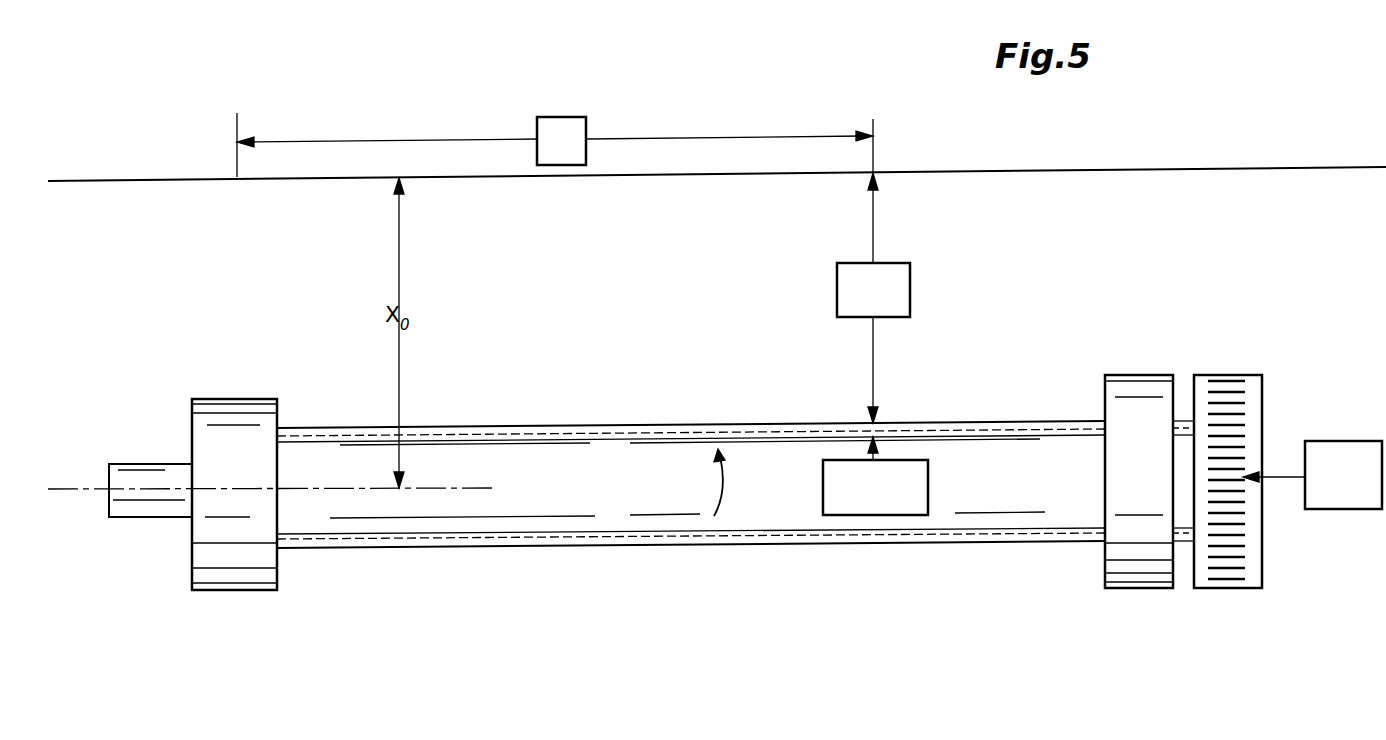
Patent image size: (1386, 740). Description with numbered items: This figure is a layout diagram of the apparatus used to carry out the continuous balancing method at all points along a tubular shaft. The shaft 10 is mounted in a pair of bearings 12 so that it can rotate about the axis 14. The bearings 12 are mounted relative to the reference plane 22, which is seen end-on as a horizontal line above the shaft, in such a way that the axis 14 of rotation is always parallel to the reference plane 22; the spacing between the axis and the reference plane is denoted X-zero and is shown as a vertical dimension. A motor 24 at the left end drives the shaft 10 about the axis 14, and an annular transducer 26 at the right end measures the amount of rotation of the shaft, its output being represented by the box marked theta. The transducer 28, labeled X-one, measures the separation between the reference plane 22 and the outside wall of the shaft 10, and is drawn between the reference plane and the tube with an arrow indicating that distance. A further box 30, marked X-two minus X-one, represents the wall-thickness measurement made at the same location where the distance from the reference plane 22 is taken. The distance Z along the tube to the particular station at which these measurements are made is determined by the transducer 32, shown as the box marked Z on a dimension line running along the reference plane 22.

The shaft 10 is at (502, 551).
The bearings 12 is at (237, 583).
The axis 14 is at (78, 492).
The reference plane 22 is at (1211, 171).
The motor 24 is at (140, 519).
The annular transducer 26 is at (1335, 510).
The transducer X1 28 is at (910, 284).
The X2-X1 difference sensor 30 is at (928, 481).
The transducer 32 is at (571, 112).